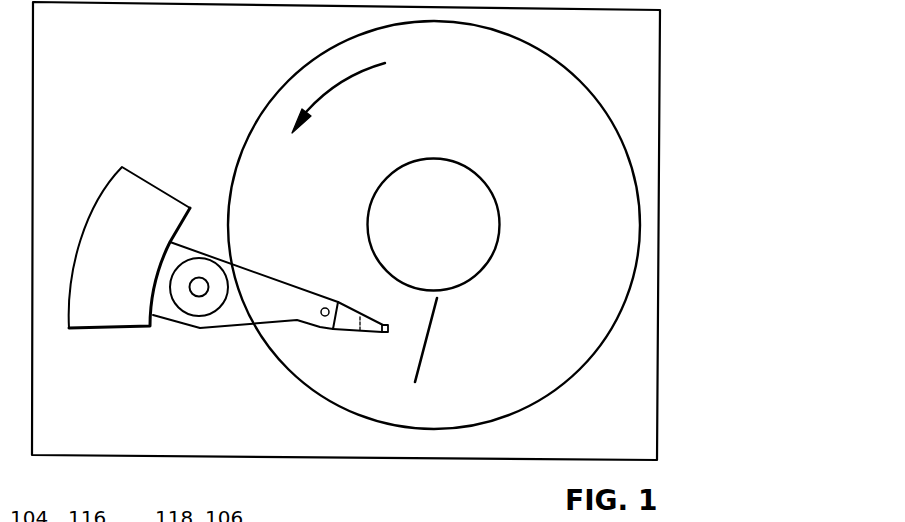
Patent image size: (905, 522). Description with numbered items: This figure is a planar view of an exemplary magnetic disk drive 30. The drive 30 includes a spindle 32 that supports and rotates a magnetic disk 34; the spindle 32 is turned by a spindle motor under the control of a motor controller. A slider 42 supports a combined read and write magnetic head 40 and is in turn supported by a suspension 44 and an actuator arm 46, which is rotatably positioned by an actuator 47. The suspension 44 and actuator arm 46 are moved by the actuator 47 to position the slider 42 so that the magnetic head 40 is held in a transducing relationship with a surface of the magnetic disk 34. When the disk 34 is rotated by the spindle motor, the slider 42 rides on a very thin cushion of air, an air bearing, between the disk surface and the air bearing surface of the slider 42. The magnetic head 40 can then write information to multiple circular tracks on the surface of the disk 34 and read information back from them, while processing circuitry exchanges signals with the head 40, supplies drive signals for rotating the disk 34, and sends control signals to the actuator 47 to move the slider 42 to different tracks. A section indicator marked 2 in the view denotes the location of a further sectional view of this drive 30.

The magnetic disk drive 30 is at (688, 38).
The spindle 32 is at (473, 168).
The magnetic disk 34 is at (578, 248).
The magnetic head 40 is at (393, 332).
The slider 42 is at (388, 325).
The suspension 44 is at (347, 330).
The actuator arm 46 is at (287, 291).
The actuator 47 is at (162, 197).
The section line for FIG. 2 is at (453, 312).